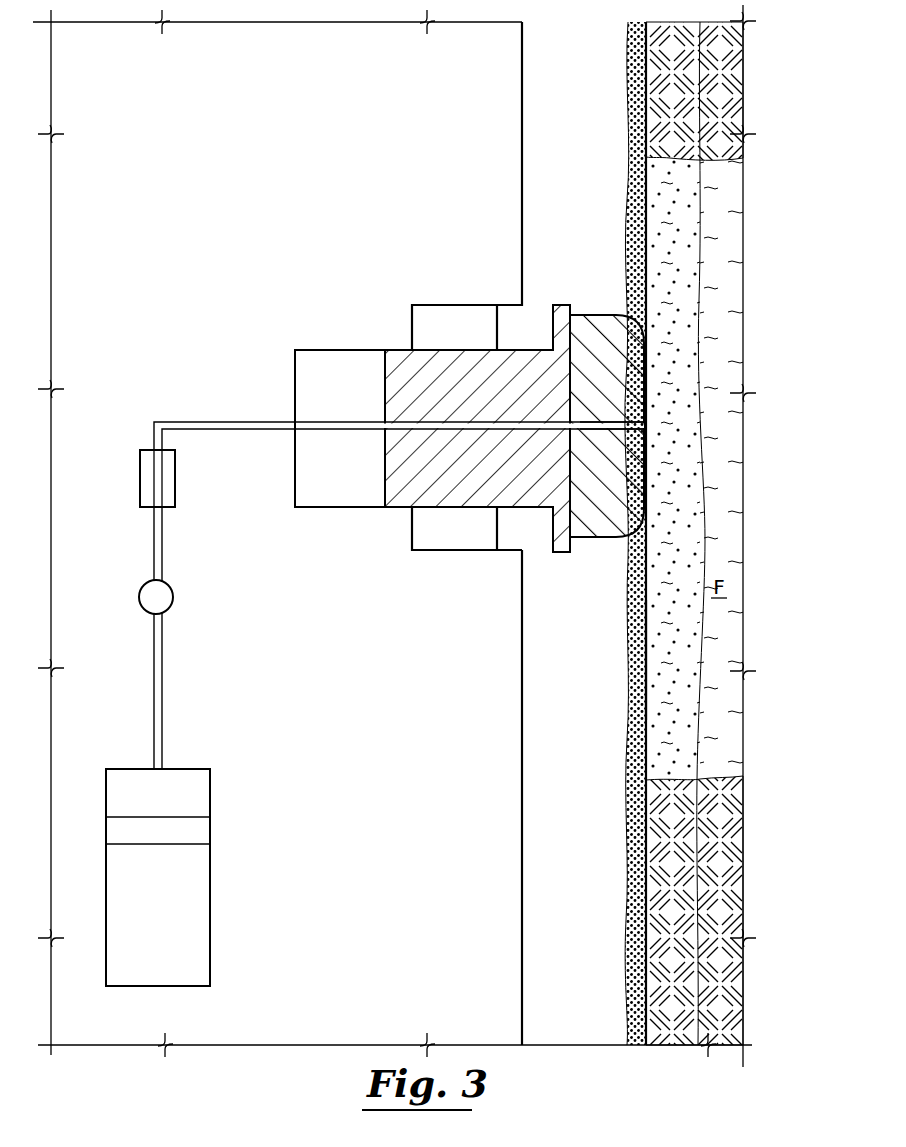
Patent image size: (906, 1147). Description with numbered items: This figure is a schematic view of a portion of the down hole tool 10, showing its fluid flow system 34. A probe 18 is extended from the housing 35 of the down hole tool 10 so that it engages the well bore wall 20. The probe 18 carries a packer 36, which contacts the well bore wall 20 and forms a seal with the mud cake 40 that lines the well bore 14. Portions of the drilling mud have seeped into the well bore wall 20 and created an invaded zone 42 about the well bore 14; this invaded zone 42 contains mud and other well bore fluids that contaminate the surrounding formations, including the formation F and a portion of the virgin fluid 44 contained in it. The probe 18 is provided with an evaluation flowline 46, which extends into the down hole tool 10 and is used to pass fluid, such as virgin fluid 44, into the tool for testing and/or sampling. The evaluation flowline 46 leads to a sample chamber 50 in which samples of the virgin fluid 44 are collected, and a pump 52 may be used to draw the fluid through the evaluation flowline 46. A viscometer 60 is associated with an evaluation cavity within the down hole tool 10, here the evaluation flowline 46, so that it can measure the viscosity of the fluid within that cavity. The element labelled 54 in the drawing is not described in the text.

The down hole tool 10 is at (522, 130).
The well bore 14 is at (646, 181).
The probe 18 is at (563, 300).
The well bore wall 20 is at (655, 648).
The fluid flow system 34 is at (197, 305).
The housing 35 is at (522, 805).
The packer 36 is at (605, 540).
The mud cake 40 is at (625, 910).
The invaded zone 42 is at (680, 200).
The virgin fluid 44 is at (720, 230).
The evaluation flowline 46 is at (202, 421).
The sample chamber 50 is at (146, 913).
The pump 52 is at (138, 597).
The passage 54 is at (623, 403).
The viscometer 60 is at (140, 480).